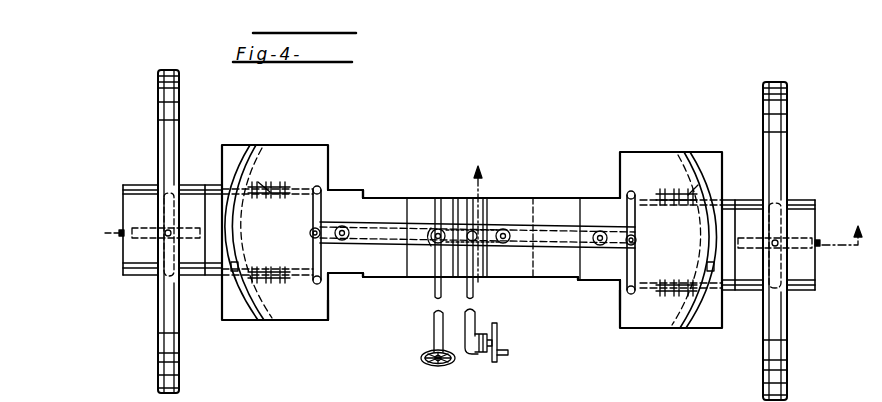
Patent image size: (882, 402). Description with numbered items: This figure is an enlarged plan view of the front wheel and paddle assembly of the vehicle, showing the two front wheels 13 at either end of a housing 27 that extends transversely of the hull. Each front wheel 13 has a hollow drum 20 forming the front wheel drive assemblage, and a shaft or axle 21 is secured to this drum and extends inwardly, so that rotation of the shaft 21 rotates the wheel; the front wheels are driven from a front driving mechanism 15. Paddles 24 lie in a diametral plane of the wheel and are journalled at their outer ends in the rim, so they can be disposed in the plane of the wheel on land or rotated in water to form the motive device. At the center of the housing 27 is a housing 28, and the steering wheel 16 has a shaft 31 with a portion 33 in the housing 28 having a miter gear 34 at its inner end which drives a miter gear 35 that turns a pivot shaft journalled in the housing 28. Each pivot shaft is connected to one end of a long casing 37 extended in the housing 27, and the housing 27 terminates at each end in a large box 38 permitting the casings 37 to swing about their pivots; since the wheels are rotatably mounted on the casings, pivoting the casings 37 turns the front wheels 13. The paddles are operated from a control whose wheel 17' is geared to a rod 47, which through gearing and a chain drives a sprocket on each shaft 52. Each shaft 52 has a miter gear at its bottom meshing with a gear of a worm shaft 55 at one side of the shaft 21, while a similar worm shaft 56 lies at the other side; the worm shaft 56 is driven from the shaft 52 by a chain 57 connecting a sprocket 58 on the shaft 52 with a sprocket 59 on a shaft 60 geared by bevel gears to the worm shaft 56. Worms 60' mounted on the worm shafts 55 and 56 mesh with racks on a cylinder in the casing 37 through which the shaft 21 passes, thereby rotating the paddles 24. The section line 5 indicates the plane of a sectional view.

The front wheel 13 is at (168, 161).
The hollow drum 20 is at (124, 273).
The paddle 24 is at (138, 227).
The shaft or axle 21 is at (118, 233).
The section line 5- 5 is at (668, 220).
The front driving mechanism 15 is at (196, 281).
The large box 38 is at (297, 318).
The long casing 37 is at (583, 197).
The shaft 52 is at (325, 197).
The housing 27 is at (236, 312).
The worm shaft 56 is at (277, 300).
The worm 60' is at (477, 232).
The shaft 60 is at (471, 308).
The worm shaft 55 is at (293, 187).
The chain 57 is at (332, 205).
The sprocket 58 is at (320, 185).
The sprocket 59 is at (326, 285).
The housing 28 is at (517, 268).
The portion 33 is at (436, 264).
The miter gear 35 is at (443, 215).
The miter gear 34 is at (430, 230).
The shaft 31 is at (434, 321).
The steering wheel 16 is at (422, 359).
The rod 47 is at (476, 286).
The wheel 17' is at (505, 341).